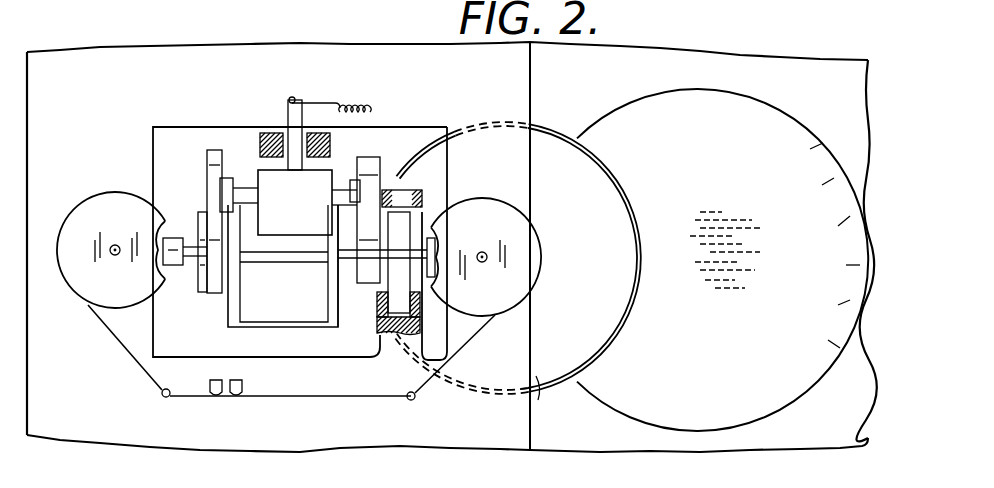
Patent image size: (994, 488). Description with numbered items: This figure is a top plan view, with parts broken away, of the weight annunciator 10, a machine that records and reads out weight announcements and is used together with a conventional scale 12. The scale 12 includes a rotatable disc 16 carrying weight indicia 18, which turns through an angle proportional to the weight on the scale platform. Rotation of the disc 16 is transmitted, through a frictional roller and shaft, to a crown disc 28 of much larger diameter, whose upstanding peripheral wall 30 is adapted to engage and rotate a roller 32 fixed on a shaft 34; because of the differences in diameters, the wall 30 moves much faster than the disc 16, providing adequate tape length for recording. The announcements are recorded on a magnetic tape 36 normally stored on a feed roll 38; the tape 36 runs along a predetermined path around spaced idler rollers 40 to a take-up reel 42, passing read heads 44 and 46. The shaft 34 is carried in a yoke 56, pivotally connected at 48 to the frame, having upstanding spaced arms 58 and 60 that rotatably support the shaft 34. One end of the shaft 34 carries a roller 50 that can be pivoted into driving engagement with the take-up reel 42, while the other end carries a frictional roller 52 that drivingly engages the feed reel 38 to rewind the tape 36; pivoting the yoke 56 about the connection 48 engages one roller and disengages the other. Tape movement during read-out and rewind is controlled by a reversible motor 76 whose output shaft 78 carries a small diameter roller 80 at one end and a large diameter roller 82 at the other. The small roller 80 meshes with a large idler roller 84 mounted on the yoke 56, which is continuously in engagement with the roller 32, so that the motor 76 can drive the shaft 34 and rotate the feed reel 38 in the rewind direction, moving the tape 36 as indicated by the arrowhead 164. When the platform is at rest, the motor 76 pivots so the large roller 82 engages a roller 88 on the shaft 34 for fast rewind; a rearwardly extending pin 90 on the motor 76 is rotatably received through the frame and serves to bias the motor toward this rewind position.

The weight annunciator 10 is at (375, 428).
The scale 12 is at (842, 374).
The rotatable disc 16 is at (823, 146).
The weight indicia 18 is at (828, 182).
The crown disc 28 is at (540, 392).
The upstanding peripheral wall 30 is at (616, 342).
The roller 32 is at (366, 283).
The shaft 34 is at (280, 262).
The magnetic tape 36 is at (126, 352).
The feed roll 38 is at (112, 196).
The idler rollers 40 is at (164, 396).
The take-up reel 42 is at (528, 258).
The read head 44 is at (212, 380).
The read head 46 is at (240, 380).
The pivotal connection 48 is at (430, 212).
The roller 50 is at (437, 243).
The frictional roller 52 is at (172, 238).
The yoke 56 is at (290, 326).
The arm 58 is at (230, 305).
The arm 60 is at (336, 326).
The reversible motor 76 is at (375, 190).
The output shaft 78 is at (246, 188).
The small diameter roller 80 is at (372, 165).
The large diameter roller 82 is at (258, 150).
The idler roller 84 is at (362, 223).
The roller 88 is at (200, 283).
The pin 90 is at (290, 135).
The arrowhead 164 is at (228, 418).